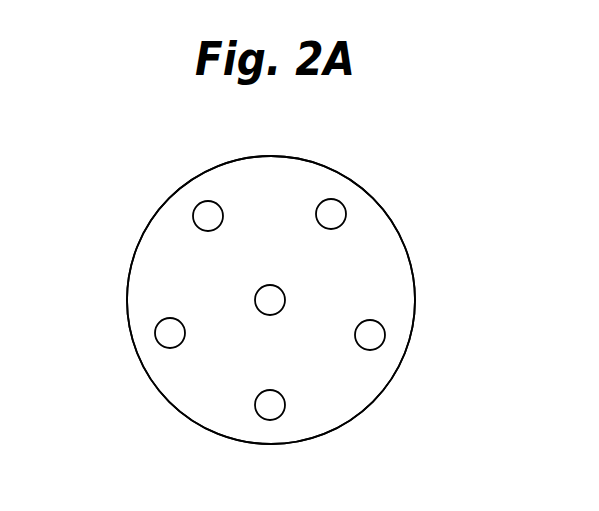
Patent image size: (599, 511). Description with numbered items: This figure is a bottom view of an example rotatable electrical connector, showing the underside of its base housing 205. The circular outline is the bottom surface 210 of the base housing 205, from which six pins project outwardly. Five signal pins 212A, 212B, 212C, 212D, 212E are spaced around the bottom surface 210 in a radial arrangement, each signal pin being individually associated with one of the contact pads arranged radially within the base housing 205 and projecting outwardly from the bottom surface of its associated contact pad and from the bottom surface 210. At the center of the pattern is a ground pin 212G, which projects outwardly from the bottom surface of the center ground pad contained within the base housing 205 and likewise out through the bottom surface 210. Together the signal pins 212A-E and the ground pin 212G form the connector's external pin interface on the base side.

The base housing 205 is at (420, 243).
The bottom surface 210 is at (253, 197).
The signal pin 212A is at (163, 334).
The signal pin 212B is at (204, 215).
The signal pin 212C is at (340, 212).
The signal pin 212D is at (377, 330).
The signal pin 212E is at (277, 412).
The ground pin 212G is at (270, 294).